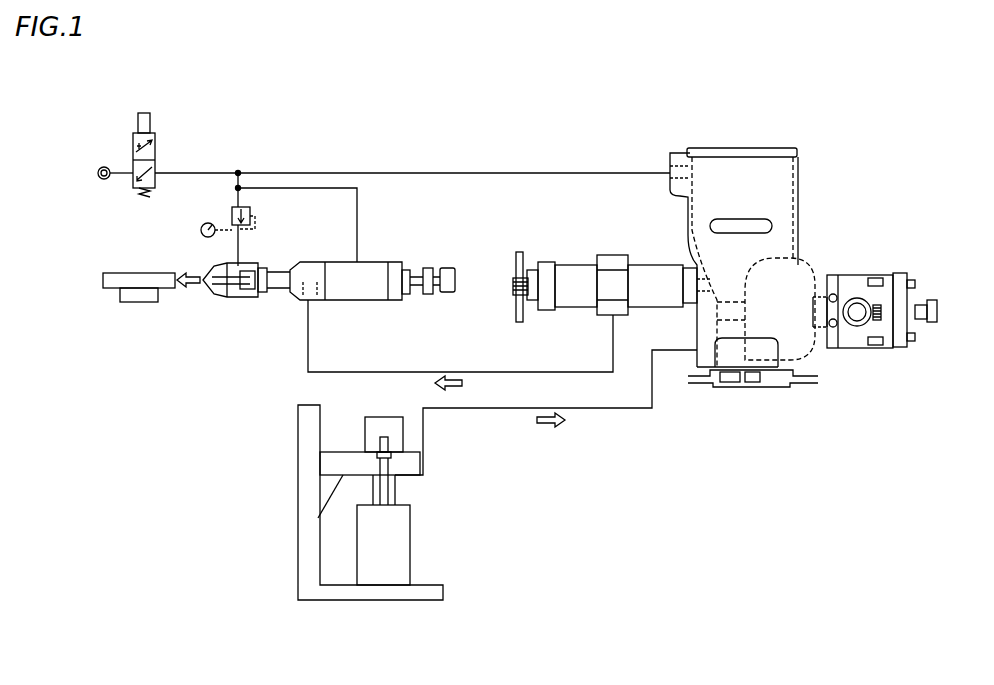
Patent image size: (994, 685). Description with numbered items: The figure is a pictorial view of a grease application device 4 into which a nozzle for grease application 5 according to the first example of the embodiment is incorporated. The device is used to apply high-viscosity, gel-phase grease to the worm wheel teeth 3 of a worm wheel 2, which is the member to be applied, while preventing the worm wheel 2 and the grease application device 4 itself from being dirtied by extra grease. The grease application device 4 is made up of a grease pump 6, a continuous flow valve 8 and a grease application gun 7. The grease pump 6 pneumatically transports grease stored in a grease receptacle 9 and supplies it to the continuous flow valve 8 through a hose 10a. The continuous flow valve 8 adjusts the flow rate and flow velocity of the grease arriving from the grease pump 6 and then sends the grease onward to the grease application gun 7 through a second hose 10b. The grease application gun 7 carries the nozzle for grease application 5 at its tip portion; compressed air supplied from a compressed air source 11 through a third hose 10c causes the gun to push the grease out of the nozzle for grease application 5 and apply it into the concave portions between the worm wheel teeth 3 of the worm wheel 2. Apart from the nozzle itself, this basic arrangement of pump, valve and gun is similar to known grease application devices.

The worm wheel 2 is at (117, 277).
The worm wheel teeth 3 is at (137, 290).
The grease application device 4 is at (803, 227).
The nozzle for grease application 5 is at (235, 297).
The grease pump 6 is at (383, 578).
The grease application gun 7 is at (373, 270).
The continuous flow valve 8 is at (777, 188).
The grease receptacle 9 is at (402, 543).
The hose 10a is at (502, 410).
The hose 10b is at (477, 368).
The hose 10c is at (207, 173).
The compressed air source 11 is at (158, 150).